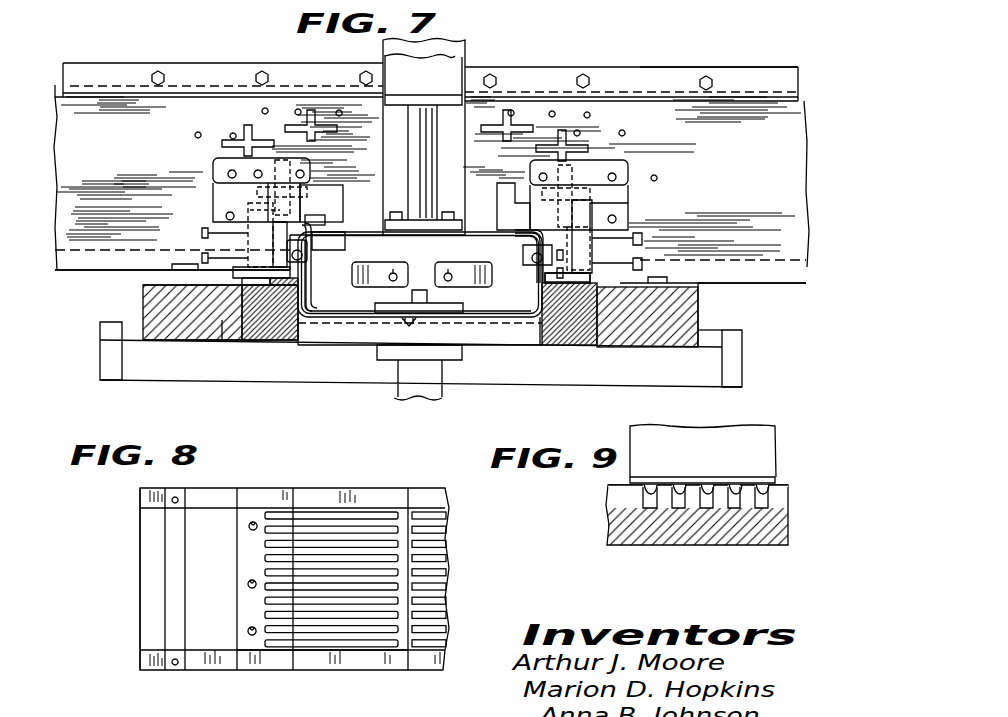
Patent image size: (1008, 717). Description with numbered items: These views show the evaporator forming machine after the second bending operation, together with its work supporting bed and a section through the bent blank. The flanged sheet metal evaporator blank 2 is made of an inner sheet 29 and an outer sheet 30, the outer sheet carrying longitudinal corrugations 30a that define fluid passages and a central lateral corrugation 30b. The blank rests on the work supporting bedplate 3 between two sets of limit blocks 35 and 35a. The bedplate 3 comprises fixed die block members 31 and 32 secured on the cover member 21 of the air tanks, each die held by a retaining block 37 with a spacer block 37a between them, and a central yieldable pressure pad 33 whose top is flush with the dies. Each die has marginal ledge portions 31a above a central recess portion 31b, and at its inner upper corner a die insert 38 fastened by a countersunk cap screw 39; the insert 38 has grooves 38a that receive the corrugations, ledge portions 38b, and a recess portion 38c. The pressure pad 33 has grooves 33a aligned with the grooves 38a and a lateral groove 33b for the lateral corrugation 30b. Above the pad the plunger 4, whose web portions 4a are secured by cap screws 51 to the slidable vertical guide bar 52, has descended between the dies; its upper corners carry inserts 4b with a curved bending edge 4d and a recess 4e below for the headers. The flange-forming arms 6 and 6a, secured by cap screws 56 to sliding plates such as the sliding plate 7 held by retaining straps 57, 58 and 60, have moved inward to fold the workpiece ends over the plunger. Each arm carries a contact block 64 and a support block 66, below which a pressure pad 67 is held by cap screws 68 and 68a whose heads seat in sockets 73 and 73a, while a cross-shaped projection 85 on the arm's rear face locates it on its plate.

In FIG. 7, the flanged sheet metal evaporator blank 2 is at (528, 312).
In FIG. 7, the work supporting bedplate 3 is at (134, 295).
In FIG. 7, the plunger 4 is at (471, 234).
In FIG. 7, the web portions 4a is at (407, 262).
In FIG. 7, the inserts 4b is at (337, 247).
In FIG. 7, the outer curved bending edge 4d is at (312, 255).
In FIG. 7, the recess 4e is at (306, 277).
In FIG. 7, the flange-forming arm 6 is at (616, 171).
In FIG. 7, the flange-forming arm 6a is at (204, 159).
In FIG. 7, the sliding plate 7 is at (720, 184).
In FIG. 7, the cover member 21 is at (220, 372).
In FIG. 9, the inner sheet 29 is at (644, 480).
In FIG. 9, the outer sheet 30 is at (628, 483).
In FIG. 7, the longitudinal corrugations 30a is at (464, 329).
In FIG. 9, the longitudinal corrugations 30a is at (698, 483).
In FIG. 7, the lateral corrugation 30b is at (410, 327).
In FIG. 7, the fixed die block member 31 is at (143, 309).
In FIG. 8, the fixed die block member 31 is at (130, 525).
In FIG. 8, the marginal ledge portions 31a is at (232, 492).
In FIG. 8, the central recess portion 31b is at (152, 551).
In FIG. 7, the fixed die block member 32 is at (692, 310).
In FIG. 7, the pressure pad 33 is at (314, 344).
In FIG. 8, the pressure pad 33 is at (350, 664).
In FIG. 8, the grooves 33a is at (337, 526).
In FIG. 8, the lateral groove 33b is at (412, 494).
In FIG. 7, the limit blocks 35 is at (172, 272).
In FIG. 8, the limit blocks 35 is at (172, 608).
In FIG. 7, the limit blocks 35a is at (678, 279).
In FIG. 7, the retaining block 37 is at (730, 380).
In FIG. 7, the spacer block 37a is at (720, 330).
In FIG. 7, the die insert 38 is at (280, 336).
In FIG. 8, the die insert 38 is at (272, 666).
In FIG. 8, the grooves 38a is at (272, 565).
In FIG. 9, the grooves 38a is at (645, 503).
In FIG. 8, the marginal ledge portions 38b is at (288, 492).
In FIG. 8, the recess portion 38c is at (247, 581).
In FIG. 7, the countersunk cap screw 39 is at (224, 341).
In FIG. 7, the cap screws 51 is at (450, 272).
In FIG. 7, the slidable vertical guide bar 52 is at (448, 40).
In FIG. 7, the cap screws 56 is at (213, 169).
In FIG. 7, the retaining strap 57 is at (678, 52).
In FIG. 7, the retaining strap 58 is at (762, 278).
In FIG. 7, the retaining strap 60 is at (292, 64).
In FIG. 7, the contact block 64 is at (338, 192).
In FIG. 7, the support block 66 is at (226, 213).
In FIG. 7, the pressure pad 67 is at (304, 233).
In FIG. 7, the cap screw 68 is at (200, 236).
In FIG. 7, the cap screw 68a is at (202, 261).
In FIG. 7, the socket 73 is at (246, 249).
In FIG. 7, the socket 73a is at (244, 274).
In FIG. 7, the cross-shaped projection 85 is at (293, 190).